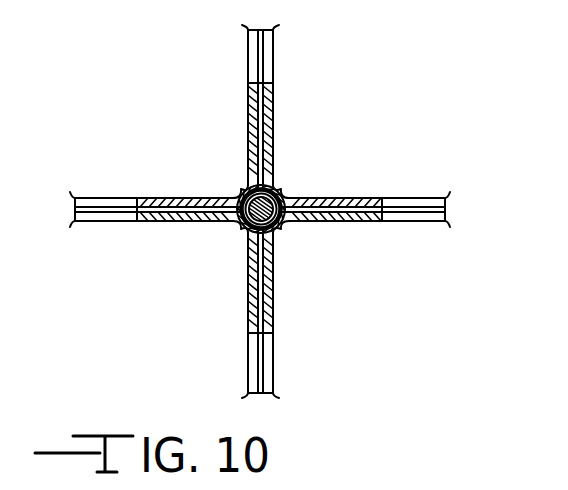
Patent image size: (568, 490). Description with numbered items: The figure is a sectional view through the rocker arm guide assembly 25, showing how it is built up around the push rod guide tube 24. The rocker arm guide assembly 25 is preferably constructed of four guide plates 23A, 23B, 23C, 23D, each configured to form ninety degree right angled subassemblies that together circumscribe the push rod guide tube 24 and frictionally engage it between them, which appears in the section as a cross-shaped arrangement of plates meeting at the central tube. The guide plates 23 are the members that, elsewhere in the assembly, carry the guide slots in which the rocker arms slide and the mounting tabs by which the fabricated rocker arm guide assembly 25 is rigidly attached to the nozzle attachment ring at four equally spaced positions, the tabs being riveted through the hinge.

The guide plates 23 is at (238, 192).
The guide plate 23A is at (110, 222).
The guide plate 23B is at (377, 220).
The guide plate 23C is at (110, 198).
The guide plate 23D is at (428, 197).
The push rod guide tube 24 is at (283, 228).
The rocker arm guide assembly 25 is at (353, 198).